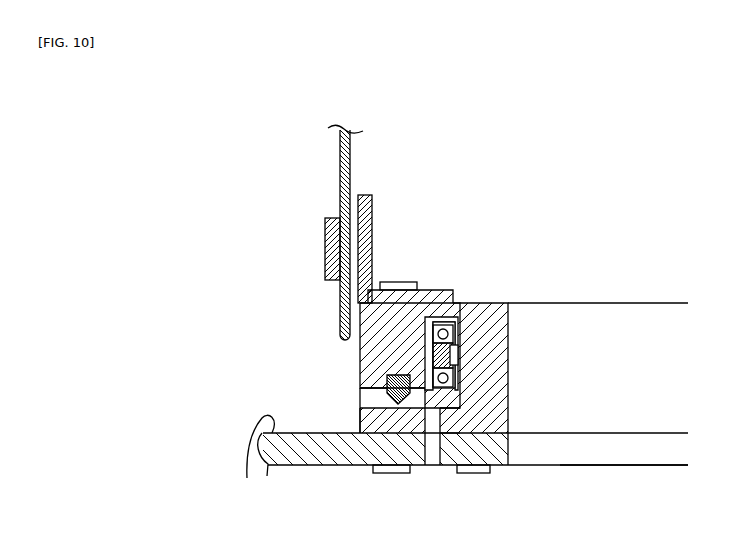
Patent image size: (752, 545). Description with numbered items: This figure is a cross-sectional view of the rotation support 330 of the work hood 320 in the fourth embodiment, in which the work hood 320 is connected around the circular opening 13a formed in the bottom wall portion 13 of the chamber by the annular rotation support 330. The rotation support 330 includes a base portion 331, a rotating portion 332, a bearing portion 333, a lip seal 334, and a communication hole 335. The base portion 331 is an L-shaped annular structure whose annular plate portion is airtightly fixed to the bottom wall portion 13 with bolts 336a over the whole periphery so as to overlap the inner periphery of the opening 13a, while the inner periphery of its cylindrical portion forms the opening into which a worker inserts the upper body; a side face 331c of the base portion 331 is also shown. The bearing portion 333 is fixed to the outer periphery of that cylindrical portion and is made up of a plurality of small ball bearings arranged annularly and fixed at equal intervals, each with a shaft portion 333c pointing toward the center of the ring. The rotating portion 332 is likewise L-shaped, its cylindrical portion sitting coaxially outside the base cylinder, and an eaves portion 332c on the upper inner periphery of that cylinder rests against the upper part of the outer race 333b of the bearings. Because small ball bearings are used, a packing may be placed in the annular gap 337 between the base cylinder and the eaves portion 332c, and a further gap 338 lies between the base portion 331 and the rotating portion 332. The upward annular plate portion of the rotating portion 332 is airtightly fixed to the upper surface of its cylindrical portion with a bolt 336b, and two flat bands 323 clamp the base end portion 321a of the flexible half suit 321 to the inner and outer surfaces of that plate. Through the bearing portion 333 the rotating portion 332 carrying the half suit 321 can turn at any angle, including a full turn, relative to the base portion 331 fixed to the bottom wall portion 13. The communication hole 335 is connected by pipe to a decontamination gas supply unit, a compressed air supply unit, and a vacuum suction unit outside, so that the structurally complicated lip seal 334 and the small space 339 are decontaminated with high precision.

The bottom wall portion 13 is at (254, 457).
The circular opening 13a is at (599, 468).
The work hood 320 is at (256, 222).
The half suit 321 is at (343, 164).
The plate end portion 321a is at (340, 323).
The flat band 323 is at (358, 207).
The rotation support 330 is at (503, 148).
The base portion 331 is at (484, 368).
The base member side face 331c is at (358, 398).
The rotating portion 332 is at (372, 226).
The eaves portion 332c is at (432, 290).
The bearing portion 333 is at (453, 338).
The outer race 333b is at (456, 320).
The shaft portion 333c is at (455, 356).
The lip seal 334 is at (388, 387).
The communication hole 335 is at (431, 467).
The bolt 336a is at (390, 474).
The bolt 336b is at (394, 282).
The annular gap 337 is at (457, 304).
The gap 338 is at (348, 400).
The small space 339 is at (466, 414).